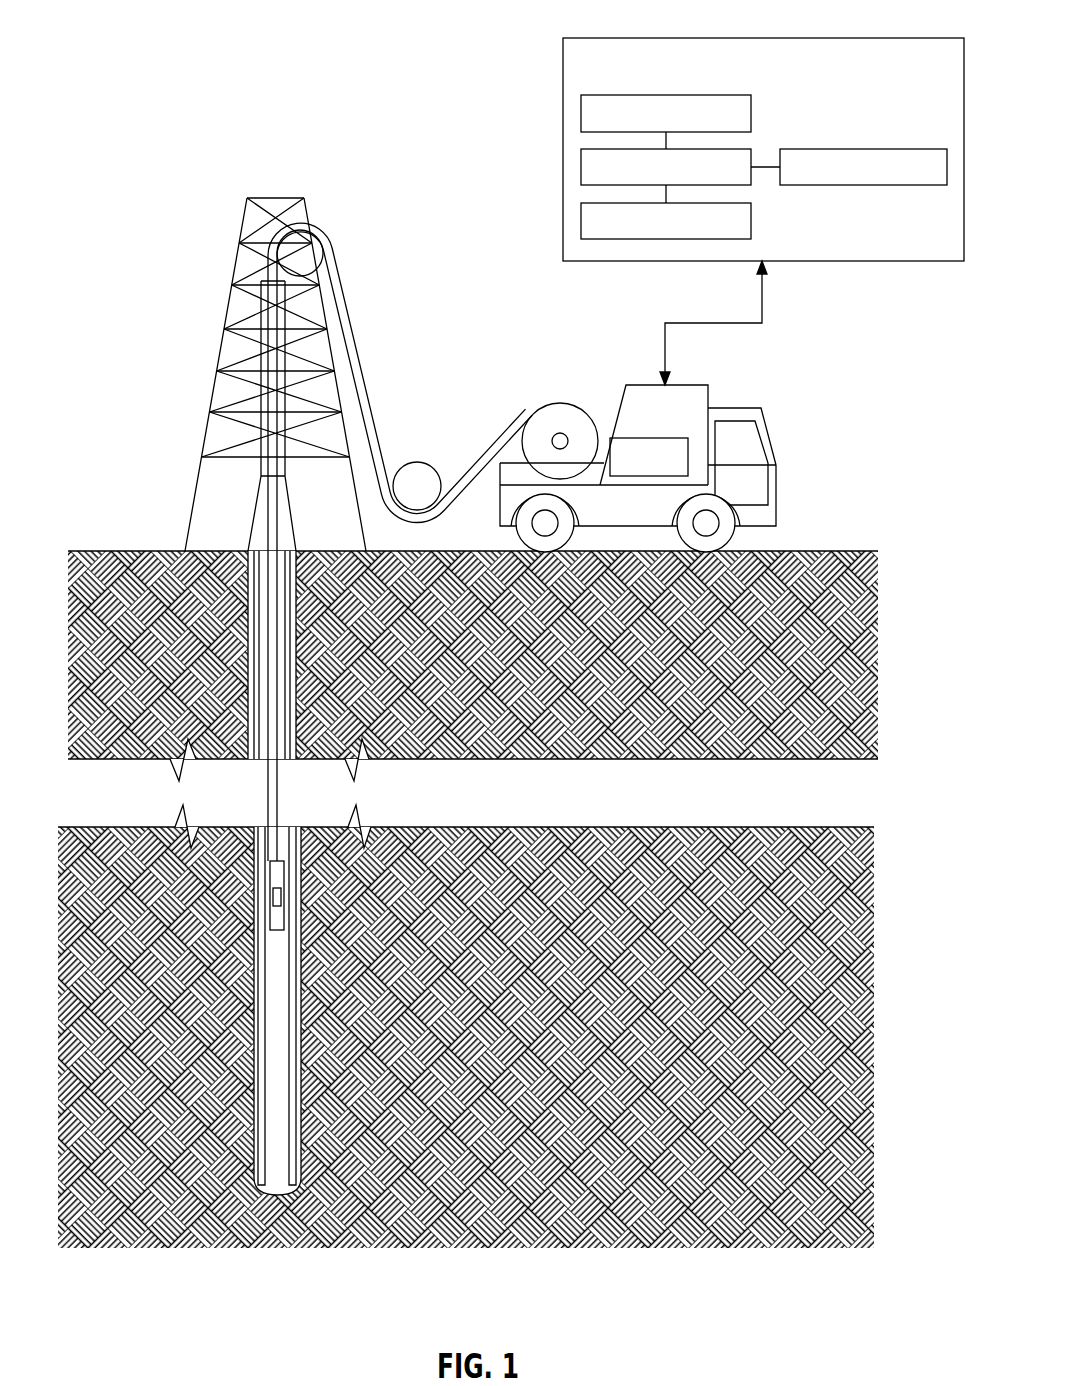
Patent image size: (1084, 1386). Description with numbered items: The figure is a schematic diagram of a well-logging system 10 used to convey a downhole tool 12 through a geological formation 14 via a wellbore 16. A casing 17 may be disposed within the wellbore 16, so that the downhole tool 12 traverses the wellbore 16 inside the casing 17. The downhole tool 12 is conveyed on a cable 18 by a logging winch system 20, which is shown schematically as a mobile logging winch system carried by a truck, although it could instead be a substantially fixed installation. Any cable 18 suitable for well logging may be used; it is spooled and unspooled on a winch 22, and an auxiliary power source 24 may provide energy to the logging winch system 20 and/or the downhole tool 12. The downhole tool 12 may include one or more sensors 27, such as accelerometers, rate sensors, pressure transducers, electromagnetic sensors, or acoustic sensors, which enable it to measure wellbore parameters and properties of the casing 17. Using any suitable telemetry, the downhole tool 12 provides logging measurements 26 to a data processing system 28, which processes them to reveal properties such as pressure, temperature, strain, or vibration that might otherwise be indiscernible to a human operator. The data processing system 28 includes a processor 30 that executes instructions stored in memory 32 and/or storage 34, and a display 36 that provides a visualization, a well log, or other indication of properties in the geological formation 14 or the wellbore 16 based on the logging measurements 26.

The well-logging system 10 is at (183, 247).
The downhole tool 12 is at (314, 852).
The geological formation 14 is at (817, 1192).
The wellbore 16 is at (237, 619).
The casing 17 is at (252, 1065).
The cable 18 is at (379, 333).
The logging winch system 20 is at (632, 431).
The winch 22 is at (526, 405).
The auxiliary power source 24 is at (618, 430).
The logging measurements 26 is at (757, 300).
The sensors 27 is at (276, 889).
The data processing system 28 is at (739, 134).
The processor 30 is at (573, 163).
The memory 32 is at (573, 108).
The storage 34 is at (573, 217).
The display 36 is at (875, 141).